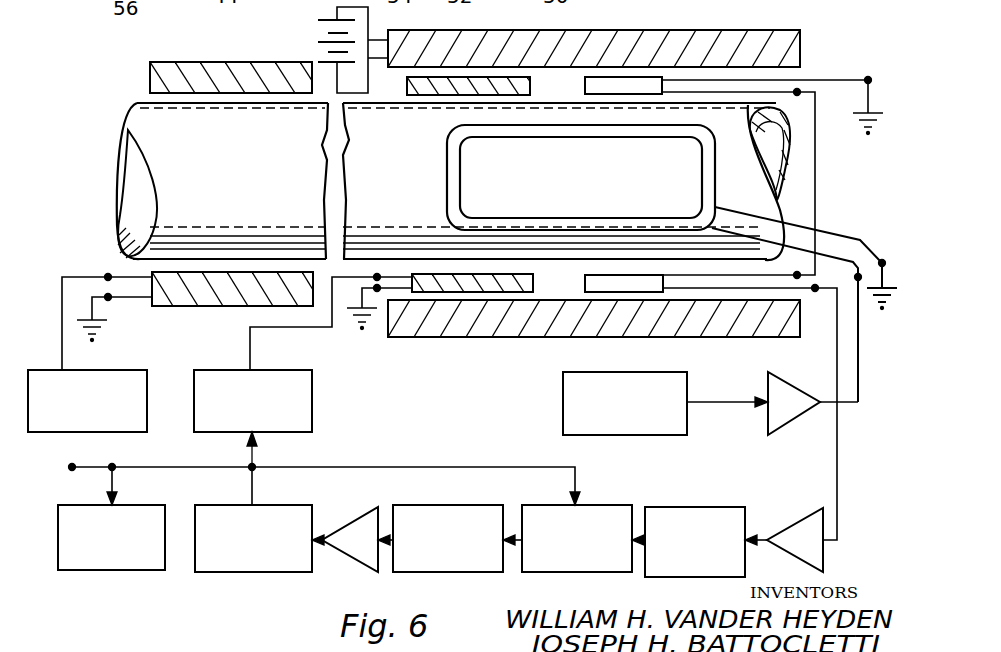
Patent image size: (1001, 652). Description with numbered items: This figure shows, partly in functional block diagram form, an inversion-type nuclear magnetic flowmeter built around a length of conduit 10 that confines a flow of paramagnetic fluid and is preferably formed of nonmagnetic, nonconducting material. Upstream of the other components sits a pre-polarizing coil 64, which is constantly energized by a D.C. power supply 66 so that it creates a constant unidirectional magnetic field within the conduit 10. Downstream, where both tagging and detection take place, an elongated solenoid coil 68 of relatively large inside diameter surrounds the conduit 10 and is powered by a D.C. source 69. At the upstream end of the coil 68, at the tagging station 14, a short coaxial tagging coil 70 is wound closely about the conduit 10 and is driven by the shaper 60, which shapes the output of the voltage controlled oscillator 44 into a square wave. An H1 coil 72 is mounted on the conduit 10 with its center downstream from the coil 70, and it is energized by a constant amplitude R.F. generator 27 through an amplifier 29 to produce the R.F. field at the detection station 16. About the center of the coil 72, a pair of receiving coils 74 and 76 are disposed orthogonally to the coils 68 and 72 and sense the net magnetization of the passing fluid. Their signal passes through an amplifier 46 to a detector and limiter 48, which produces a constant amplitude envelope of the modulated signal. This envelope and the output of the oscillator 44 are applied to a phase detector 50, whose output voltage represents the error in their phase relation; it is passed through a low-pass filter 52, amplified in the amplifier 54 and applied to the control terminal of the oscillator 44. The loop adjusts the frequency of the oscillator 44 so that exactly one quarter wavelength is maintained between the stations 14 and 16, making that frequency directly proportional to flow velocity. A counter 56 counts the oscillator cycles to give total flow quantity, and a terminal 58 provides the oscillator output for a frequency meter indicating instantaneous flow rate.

The conduit 10 is at (124, 133).
The tagging station 14 is at (216, 176).
The detection station 16 is at (666, 174).
The R.F. generator 27 is at (563, 420).
The amplifier 29 is at (783, 425).
The voltage controlled oscillator 44 is at (218, 572).
The amplifier 46 is at (812, 492).
The detector and limiter 48 is at (728, 507).
The phase detector 50 is at (620, 487).
The low-pass filter 52 is at (447, 572).
The amplifier 54 is at (362, 558).
The counter 56 is at (125, 570).
The terminal 58 is at (72, 468).
The shaper 60 is at (312, 406).
The pre-polarizing coil 64 is at (240, 75).
The D.C. power supply 66 is at (147, 400).
The elongated solenoid coil 68 is at (573, 50).
The D.C. source 69 is at (320, 27).
The tagging coil 70 is at (470, 82).
The H1 coil 72 is at (585, 134).
The receiving coil 74 is at (647, 83).
The receiving coil 76 is at (620, 276).